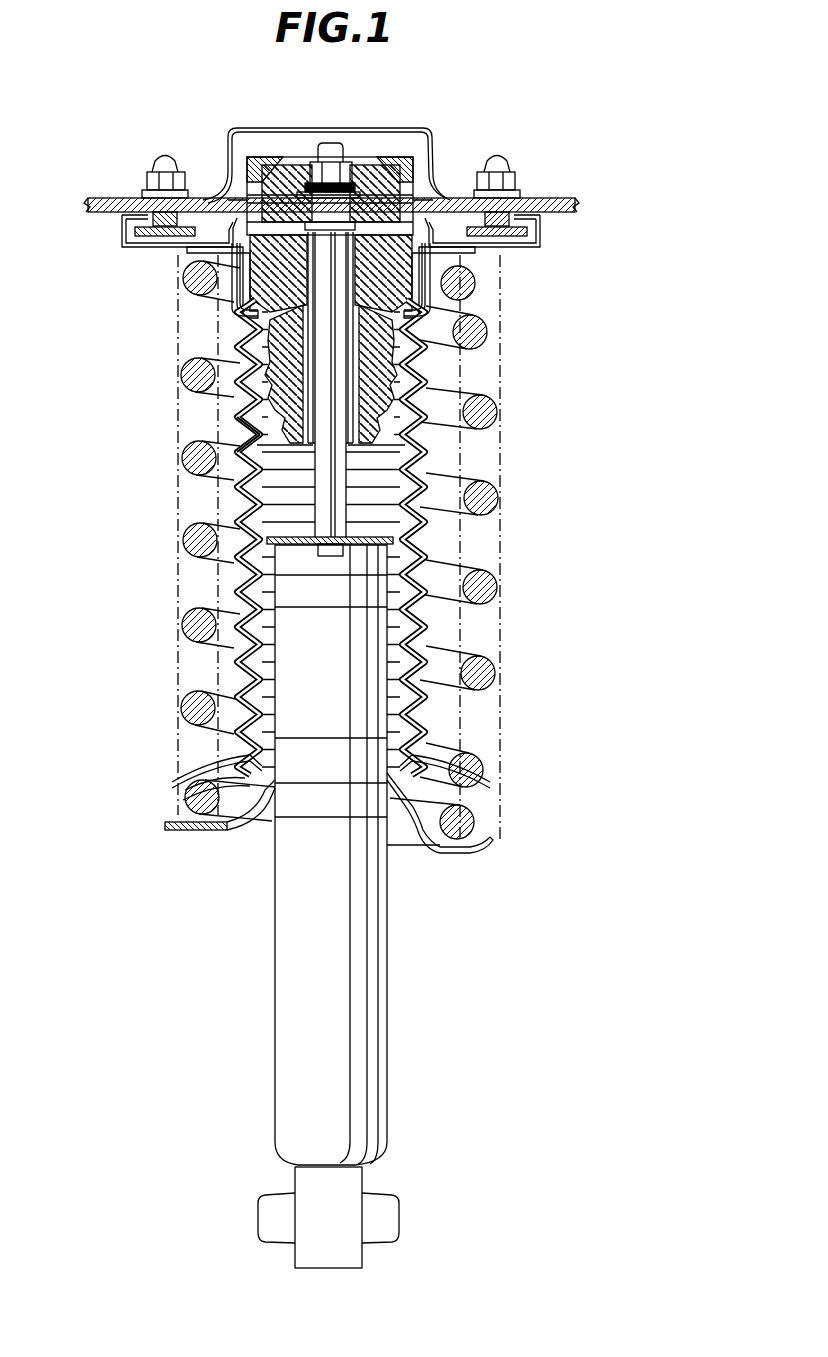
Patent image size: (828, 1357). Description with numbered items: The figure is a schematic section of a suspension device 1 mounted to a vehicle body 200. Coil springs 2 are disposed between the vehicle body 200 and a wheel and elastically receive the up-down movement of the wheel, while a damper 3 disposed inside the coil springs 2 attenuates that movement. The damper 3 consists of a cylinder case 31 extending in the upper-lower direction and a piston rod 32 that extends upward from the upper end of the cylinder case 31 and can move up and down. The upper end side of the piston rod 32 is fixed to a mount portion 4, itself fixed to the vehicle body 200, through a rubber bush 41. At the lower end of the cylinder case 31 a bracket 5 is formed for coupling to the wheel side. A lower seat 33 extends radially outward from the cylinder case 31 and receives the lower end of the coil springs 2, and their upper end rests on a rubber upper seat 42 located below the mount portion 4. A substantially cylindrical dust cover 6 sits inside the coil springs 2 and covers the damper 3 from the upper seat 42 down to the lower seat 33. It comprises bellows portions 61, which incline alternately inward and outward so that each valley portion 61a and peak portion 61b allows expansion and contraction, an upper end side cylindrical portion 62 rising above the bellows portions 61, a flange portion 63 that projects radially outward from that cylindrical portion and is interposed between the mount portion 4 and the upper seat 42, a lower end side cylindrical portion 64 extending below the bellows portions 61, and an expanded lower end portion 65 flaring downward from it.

The suspension device 1 is at (626, 225).
The coil springs 2 is at (500, 400).
The damper 3 is at (605, 520).
The cylinder case 31 is at (337, 640).
The piston rod 32 is at (330, 507).
The lower seat 33 is at (493, 835).
The mount portion 4 is at (190, 213).
The bush 41 is at (407, 182).
The upper seat 42 is at (475, 283).
The bracket 5 is at (333, 1225).
The dust cover 6 is at (427, 437).
The bellows portions 61 is at (253, 512).
The valley portion 61a is at (247, 423).
The peak portion 61b is at (253, 440).
The upper end side cylindrical portion 62 is at (228, 302).
The flange portion 63 is at (187, 273).
The lower end side cylindrical portion 64 is at (257, 757).
The expanded lower end portion 65 is at (250, 778).
The vehicle body 200 is at (553, 200).